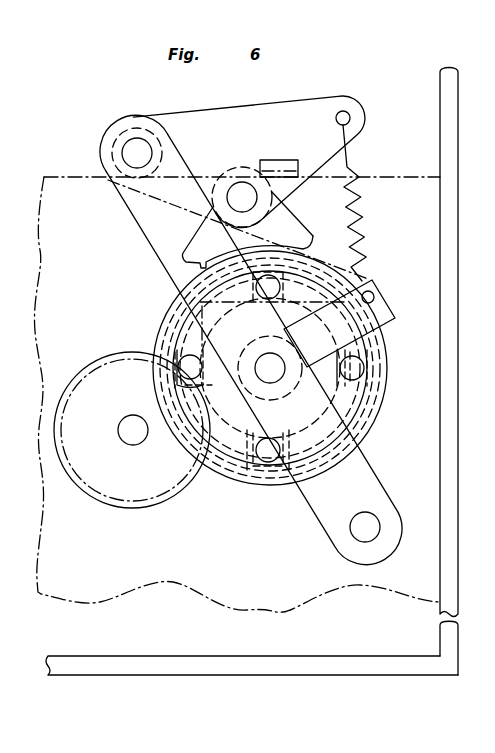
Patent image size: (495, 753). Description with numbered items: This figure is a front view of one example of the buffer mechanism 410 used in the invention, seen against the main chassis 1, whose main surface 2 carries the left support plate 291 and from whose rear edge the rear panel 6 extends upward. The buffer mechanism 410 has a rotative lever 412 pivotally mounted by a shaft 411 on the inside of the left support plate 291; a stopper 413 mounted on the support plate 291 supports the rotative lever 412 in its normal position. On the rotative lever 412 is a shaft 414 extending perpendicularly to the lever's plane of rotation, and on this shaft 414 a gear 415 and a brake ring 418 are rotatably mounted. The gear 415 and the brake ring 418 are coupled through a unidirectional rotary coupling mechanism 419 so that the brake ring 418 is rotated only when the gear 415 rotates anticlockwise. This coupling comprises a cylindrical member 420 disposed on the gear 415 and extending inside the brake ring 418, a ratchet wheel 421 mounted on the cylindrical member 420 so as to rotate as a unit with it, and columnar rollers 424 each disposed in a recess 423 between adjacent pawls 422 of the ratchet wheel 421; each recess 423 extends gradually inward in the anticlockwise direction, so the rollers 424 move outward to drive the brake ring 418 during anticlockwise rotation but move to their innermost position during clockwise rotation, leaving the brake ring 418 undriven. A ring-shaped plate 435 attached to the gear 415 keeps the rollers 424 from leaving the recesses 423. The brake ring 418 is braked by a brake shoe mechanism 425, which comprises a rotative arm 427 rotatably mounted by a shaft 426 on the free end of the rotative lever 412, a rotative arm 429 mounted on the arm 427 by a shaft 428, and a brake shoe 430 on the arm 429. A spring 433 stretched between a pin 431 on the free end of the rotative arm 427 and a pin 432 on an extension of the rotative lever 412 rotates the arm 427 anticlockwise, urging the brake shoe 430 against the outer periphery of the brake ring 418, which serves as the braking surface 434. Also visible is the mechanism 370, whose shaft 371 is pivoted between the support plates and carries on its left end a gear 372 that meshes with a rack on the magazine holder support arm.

The main chassis 1 is at (449, 117).
The main surface 2 is at (434, 159).
The rear panel 6 is at (171, 657).
The left support plate 291 is at (66, 176).
The mechanism 370 is at (79, 359).
The shaft 371 is at (133, 445).
The gear 372 is at (124, 505).
The buffer mechanism 410 is at (118, 102).
The shaft 411 is at (362, 535).
The rotative lever 412 is at (381, 486).
The stopper 413 is at (281, 166).
The shaft 414 is at (262, 356).
The gear 415 is at (346, 383).
The brake ring 418 is at (376, 410).
The unidirectional rotary coupling mechanism 419 is at (250, 453).
The cylindrical member 420 is at (277, 384).
The ratchet wheel 421 is at (184, 331).
The pawls 422 is at (296, 454).
The recess 423 is at (209, 448).
The columnar rollers 424 is at (267, 463).
The brake shoe mechanism 425 is at (327, 209).
The shaft 426 is at (123, 140).
The rotative arm 427 is at (252, 111).
The shaft 428 is at (242, 183).
The rotative arm 429 is at (302, 217).
The brake shoe 430 is at (300, 250).
The pin 431 is at (351, 117).
The pin 432 is at (375, 293).
The spring 433 is at (364, 226).
The braking surface 434 is at (392, 358).
The ring-shaped plate 435 is at (359, 423).